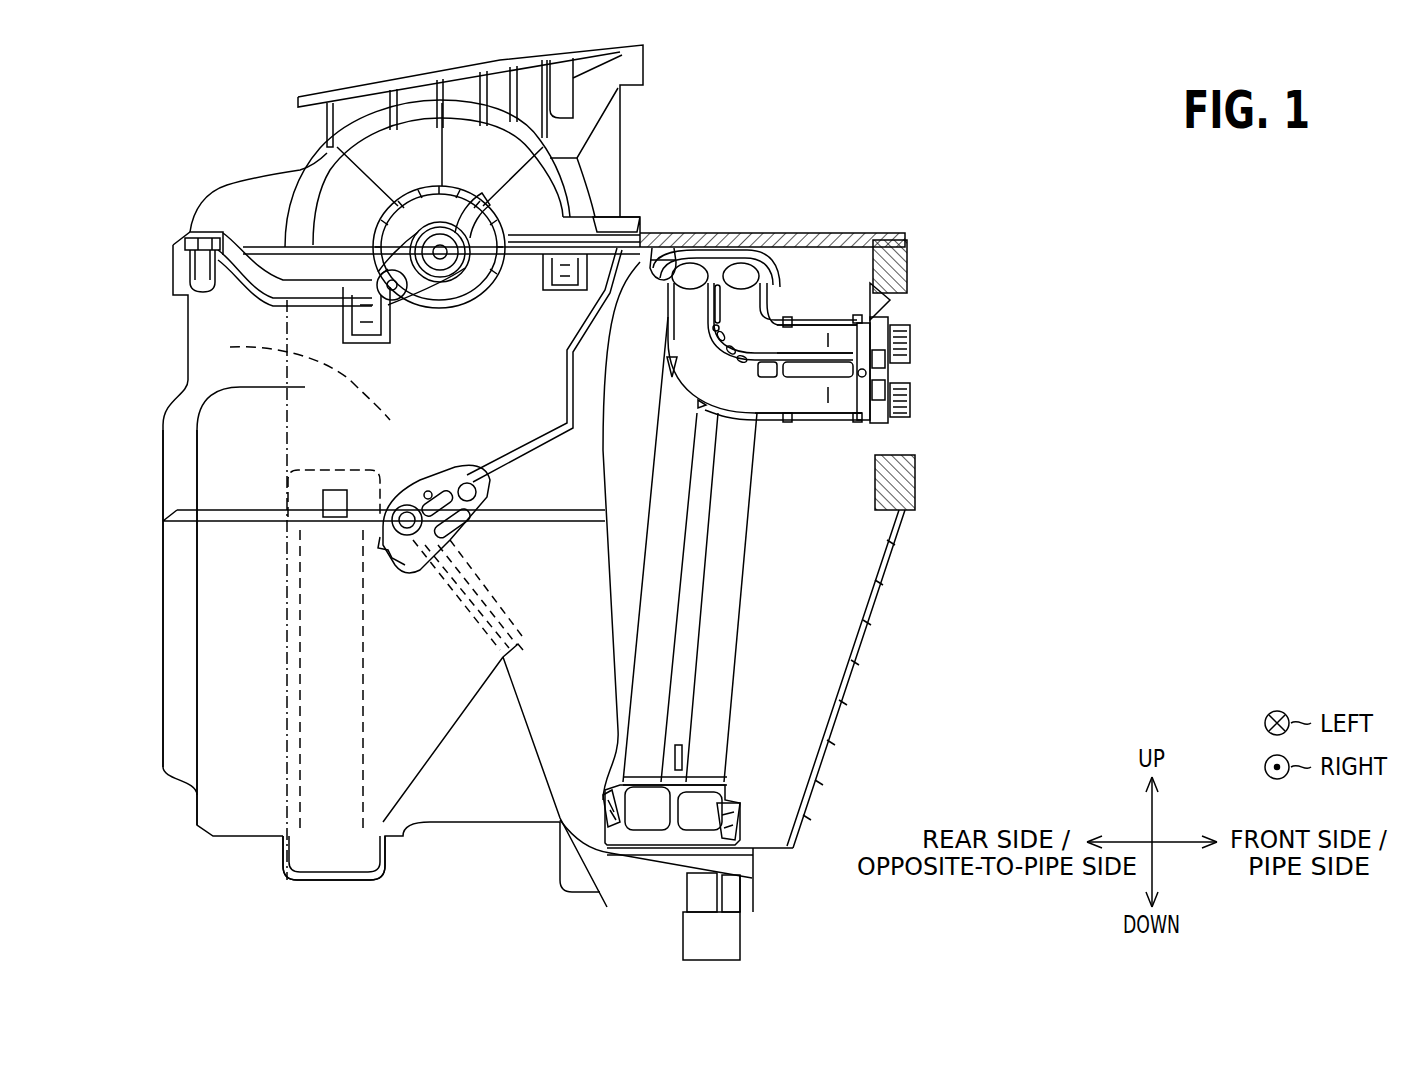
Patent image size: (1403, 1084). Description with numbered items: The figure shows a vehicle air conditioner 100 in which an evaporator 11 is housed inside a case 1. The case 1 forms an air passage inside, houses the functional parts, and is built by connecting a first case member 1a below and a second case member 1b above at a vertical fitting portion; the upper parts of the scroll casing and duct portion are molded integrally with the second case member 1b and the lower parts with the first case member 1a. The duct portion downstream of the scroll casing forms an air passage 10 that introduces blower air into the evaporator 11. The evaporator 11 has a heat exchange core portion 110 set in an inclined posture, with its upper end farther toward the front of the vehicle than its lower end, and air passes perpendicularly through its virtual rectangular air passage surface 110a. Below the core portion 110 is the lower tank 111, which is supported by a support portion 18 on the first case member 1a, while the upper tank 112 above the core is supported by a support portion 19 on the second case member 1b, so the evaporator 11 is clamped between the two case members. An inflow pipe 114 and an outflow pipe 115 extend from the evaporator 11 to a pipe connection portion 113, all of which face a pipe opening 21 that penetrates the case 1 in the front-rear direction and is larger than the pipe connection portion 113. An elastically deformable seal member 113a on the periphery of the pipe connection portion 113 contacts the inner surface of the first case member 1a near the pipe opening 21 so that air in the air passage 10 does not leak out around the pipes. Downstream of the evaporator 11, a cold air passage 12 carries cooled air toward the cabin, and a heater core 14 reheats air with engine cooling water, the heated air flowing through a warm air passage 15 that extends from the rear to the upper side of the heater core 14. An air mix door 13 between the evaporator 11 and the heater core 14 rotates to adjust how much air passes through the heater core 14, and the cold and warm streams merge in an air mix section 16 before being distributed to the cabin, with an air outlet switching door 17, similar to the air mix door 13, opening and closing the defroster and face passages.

The case 1 is at (243, 173).
The first case member 1a is at (814, 768).
The second case member 1b is at (352, 97).
The air passage 10 is at (818, 630).
The evaporator 11 is at (743, 645).
The heat exchange core portion 110 is at (710, 693).
The air passage surface 110a is at (640, 553).
The lower tank 111 is at (670, 810).
The upper tank 112 is at (702, 265).
The pipe connection portion 113 is at (893, 373).
The seal member 113a is at (860, 303).
The inflow pipe 114 is at (813, 310).
The outflow pipe 115 is at (812, 430).
The cold air passage 12 is at (628, 507).
The air mix door 13 is at (463, 620).
The heater core 14 is at (317, 760).
The warm air passage 15 is at (237, 657).
The air mix section 16 is at (230, 347).
The air outlet switching door 17 is at (455, 235).
The support portion 18 is at (727, 837).
The support portion 19 is at (655, 245).
The pipe opening 21 is at (917, 297).
The air conditioner 100 is at (897, 126).